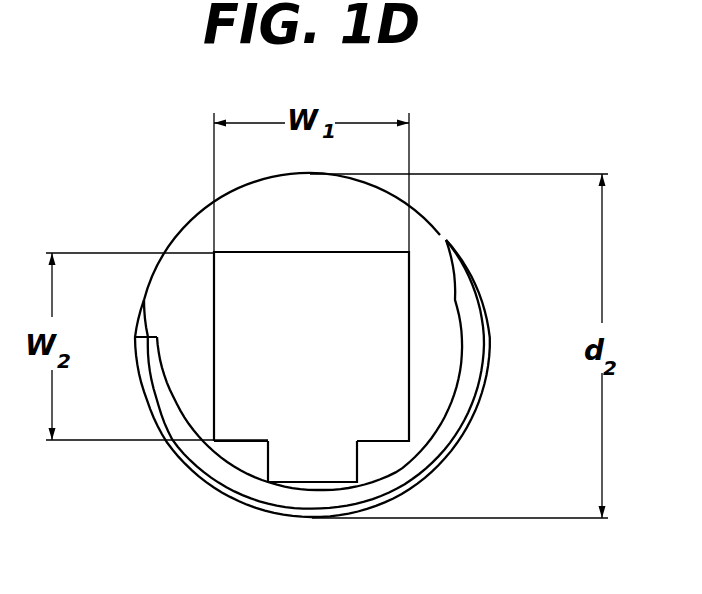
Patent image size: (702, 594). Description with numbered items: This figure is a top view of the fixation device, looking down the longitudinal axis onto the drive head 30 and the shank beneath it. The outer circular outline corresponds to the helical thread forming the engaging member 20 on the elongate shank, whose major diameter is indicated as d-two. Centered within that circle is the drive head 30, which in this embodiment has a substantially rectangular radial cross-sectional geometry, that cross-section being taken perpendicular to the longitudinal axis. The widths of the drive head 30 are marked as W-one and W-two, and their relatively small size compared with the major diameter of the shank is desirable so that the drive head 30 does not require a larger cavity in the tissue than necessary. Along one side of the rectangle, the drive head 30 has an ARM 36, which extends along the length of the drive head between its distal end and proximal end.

The engaging member 20 is at (265, 213).
The drive head 30 is at (320, 345).
The ARM 36 is at (300, 460).